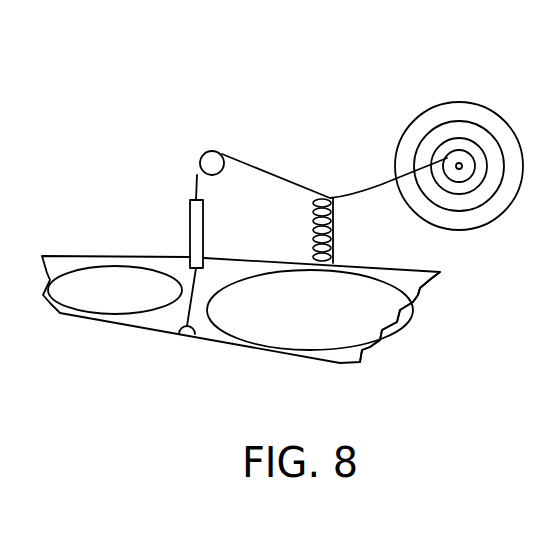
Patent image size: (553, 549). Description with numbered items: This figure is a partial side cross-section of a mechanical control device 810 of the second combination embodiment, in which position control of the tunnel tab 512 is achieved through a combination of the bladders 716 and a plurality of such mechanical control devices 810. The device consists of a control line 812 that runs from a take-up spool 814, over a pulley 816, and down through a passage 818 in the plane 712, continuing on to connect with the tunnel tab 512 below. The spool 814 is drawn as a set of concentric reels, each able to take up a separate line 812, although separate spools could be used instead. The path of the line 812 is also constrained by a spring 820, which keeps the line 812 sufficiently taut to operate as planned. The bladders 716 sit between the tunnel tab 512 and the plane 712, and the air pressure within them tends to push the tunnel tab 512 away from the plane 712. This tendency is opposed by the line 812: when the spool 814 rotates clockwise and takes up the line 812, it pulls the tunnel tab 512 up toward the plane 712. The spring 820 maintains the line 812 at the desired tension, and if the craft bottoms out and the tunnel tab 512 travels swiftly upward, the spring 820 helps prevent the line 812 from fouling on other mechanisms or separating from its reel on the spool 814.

The mechanical control device 810 is at (183, 108).
The control line 812 is at (275, 174).
The take-up spool 814 is at (491, 106).
The pulley 816 is at (200, 163).
The passage 818 is at (190, 257).
The spring 820 is at (312, 225).
The plane 712 is at (440, 272).
The bladders 716 is at (88, 315).
The tunnel tab 512 is at (340, 363).